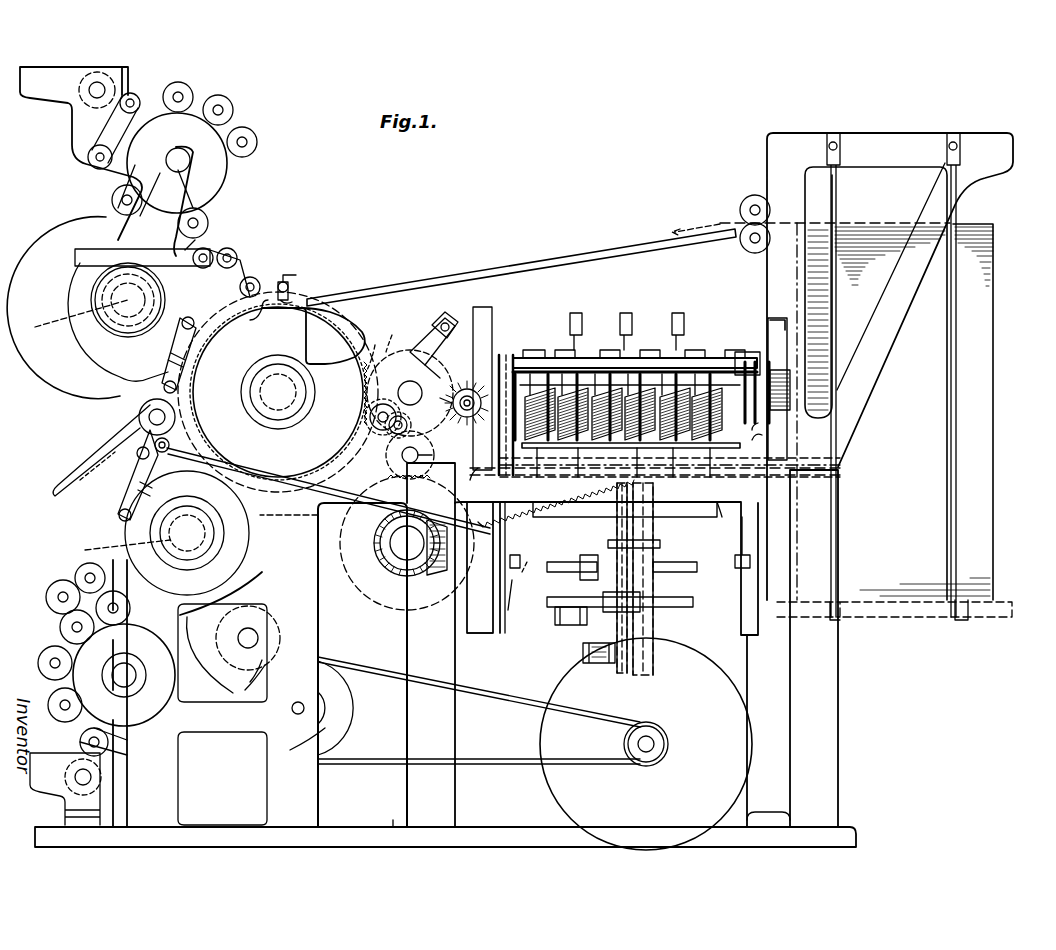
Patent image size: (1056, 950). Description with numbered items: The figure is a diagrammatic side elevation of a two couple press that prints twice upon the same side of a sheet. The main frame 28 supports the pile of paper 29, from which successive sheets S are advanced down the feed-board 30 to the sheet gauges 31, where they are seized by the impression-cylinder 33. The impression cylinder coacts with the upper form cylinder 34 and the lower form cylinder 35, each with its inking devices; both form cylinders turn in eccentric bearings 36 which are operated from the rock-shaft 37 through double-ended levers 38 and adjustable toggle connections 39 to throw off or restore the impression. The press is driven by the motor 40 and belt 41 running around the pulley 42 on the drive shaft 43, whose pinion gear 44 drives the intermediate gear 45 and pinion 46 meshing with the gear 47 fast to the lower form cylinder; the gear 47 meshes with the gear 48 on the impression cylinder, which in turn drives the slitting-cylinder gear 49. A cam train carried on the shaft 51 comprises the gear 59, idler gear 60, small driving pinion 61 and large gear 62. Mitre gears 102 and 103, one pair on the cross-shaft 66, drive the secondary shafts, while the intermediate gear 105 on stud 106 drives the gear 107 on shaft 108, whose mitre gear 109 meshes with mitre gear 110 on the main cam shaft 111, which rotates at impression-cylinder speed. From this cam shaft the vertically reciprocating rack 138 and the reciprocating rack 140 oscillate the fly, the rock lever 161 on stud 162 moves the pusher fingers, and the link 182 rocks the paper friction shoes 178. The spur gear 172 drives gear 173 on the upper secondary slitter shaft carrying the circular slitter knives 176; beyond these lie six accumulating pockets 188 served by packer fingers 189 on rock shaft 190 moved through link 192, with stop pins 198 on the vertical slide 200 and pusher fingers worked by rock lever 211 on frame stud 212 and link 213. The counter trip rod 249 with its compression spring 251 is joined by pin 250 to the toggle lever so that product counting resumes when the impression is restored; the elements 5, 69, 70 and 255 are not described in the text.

The feeding and printing mechanism 5 is at (538, 445).
The main frame 28 is at (310, 623).
The paper pile 29 is at (992, 420).
The feed-board 30 is at (535, 272).
The sheet gauges 31 is at (300, 290).
The impression-cylinder 33 is at (340, 316).
The upper form cylinder 34 is at (40, 297).
The lower form cylinder 35 is at (100, 527).
The eccentric bearings 36 is at (64, 317).
The rock-shaft 37 is at (150, 415).
The double-ended levers 38 is at (165, 382).
The adjustable toggle connections 39 is at (168, 368).
The motor 40 is at (646, 744).
The belt 41 is at (376, 775).
The pulley 42 is at (345, 709).
The drive shaft 43 is at (292, 705).
The pinion gear 44 is at (298, 750).
The intermediate gear 45 is at (245, 665).
The pinion 46 is at (262, 600).
The gear 47 is at (272, 548).
The gear 48 is at (363, 348).
The gear 49 is at (391, 333).
The shaft 51 is at (410, 393).
The gear 59 is at (428, 450).
The idler gear 60 is at (390, 440).
The small driving pinion 61 is at (375, 430).
The large gear 62 is at (362, 425).
The cross-shaft 66 is at (454, 403).
The pawl 69 is at (452, 312).
The pawl lever 70 is at (422, 345).
The mitre gears 102 is at (422, 367).
The mitre gears 103 is at (491, 415).
The intermediate gear 105 is at (392, 478).
The stud 106 is at (443, 455).
The gear 107 is at (289, 505).
The shaft 108 is at (390, 543).
The mitre gear 109 is at (385, 560).
The mitre gear 110 is at (432, 578).
The main cam shaft 111 is at (532, 577).
The vertically reciprocating rack 138 is at (760, 312).
The reciprocating rack 140 is at (492, 310).
The rock lever 161 is at (580, 572).
The stud 162 is at (672, 565).
The spur gear 172 is at (769, 438).
The gear 173 is at (768, 325).
The circular slitter knives 176 is at (552, 355).
The paper friction shoes 178 is at (628, 312).
The link 182 is at (517, 592).
The angular accumulating pockets 188 is at (728, 345).
The oscillating packer fingers 189 is at (612, 358).
The rock shaft 190 is at (652, 358).
The link 192 is at (722, 560).
The stop pins 198 is at (716, 356).
The vertical slide 200 is at (700, 520).
The rock lever 211 is at (668, 533).
The frame stud 212 is at (676, 608).
The link 213 is at (580, 655).
The counter trip rod 249 is at (222, 462).
The pin 250 is at (162, 452).
The compression spring 251 is at (552, 545).
The guide 255 is at (481, 550).
The sheets S is at (868, 200).